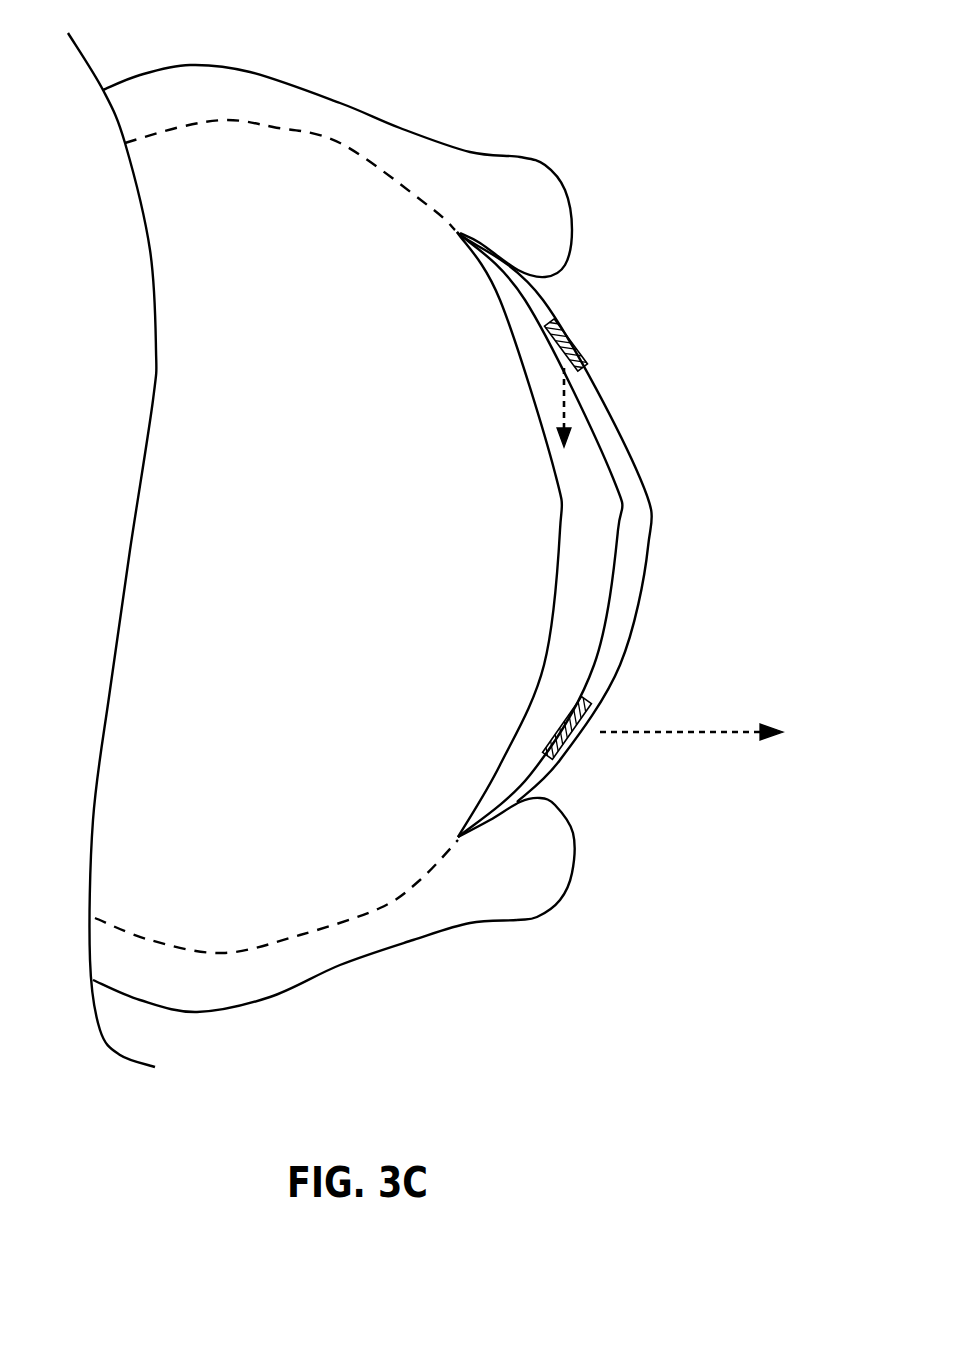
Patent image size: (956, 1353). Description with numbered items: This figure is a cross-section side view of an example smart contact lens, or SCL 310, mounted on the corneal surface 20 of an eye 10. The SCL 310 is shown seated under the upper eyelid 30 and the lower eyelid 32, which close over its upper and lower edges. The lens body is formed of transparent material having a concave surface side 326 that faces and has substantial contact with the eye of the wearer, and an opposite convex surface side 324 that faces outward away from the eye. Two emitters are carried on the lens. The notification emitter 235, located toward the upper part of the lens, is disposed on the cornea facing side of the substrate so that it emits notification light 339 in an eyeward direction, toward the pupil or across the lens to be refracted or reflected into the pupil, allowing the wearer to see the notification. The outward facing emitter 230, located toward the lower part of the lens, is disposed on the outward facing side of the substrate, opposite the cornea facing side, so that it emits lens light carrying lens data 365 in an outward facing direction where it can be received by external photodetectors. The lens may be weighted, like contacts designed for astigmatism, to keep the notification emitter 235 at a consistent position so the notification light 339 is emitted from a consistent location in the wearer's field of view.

The eye 10 is at (413, 968).
The corneal surface 20 is at (609, 534).
The upper eyelid 30 is at (570, 192).
The lower eyelid 32 is at (573, 835).
The outward facing emitter 230 is at (577, 747).
The notification emitter 235 is at (562, 326).
The smart contact lens 310 is at (610, 386).
The convex surface side 324 is at (612, 519).
The concave surface side 326 is at (621, 510).
The notification light 339 is at (578, 423).
The lens data 365 is at (721, 734).